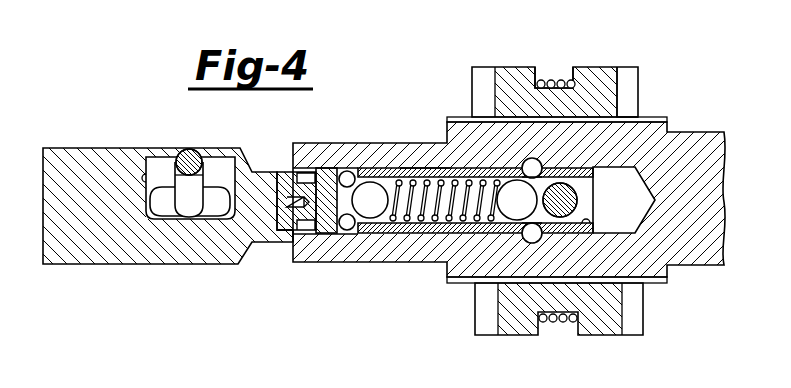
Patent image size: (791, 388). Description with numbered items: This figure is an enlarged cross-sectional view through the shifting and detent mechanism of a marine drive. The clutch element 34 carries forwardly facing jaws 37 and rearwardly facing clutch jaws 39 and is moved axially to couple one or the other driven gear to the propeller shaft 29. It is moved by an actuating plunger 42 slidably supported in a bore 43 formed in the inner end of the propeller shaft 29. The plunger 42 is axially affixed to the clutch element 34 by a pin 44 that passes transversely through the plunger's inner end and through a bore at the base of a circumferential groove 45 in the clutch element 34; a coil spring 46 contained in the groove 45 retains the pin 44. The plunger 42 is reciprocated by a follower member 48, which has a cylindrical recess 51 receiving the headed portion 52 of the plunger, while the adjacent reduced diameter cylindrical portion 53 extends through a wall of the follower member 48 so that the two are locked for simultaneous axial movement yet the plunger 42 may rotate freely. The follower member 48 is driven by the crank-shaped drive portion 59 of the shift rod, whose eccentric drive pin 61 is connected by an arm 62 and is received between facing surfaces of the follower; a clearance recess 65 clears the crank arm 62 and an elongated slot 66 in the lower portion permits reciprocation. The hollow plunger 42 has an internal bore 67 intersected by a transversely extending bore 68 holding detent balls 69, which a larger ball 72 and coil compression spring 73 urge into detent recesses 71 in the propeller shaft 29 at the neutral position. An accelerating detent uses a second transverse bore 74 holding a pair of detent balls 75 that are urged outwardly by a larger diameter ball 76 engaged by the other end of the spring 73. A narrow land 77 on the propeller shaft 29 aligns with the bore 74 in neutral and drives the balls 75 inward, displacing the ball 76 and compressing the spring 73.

The propeller shaft 29 is at (704, 267).
The clutch element 34 is at (596, 63).
The axially facing jaws 37 is at (480, 76).
The rearwardly facing clutch jaws 39 is at (629, 80).
The actuating plunger 42 is at (403, 167).
The bore 43 is at (606, 168).
The pin 44 is at (578, 203).
The circumferential groove 45 is at (570, 66).
The coil spring 46 is at (541, 79).
The follower member 48 is at (83, 250).
The cylindrical recess 51 is at (287, 241).
The headed portion 52 is at (285, 172).
The reduced diameter cylindrical portion 53 is at (320, 168).
The drive portion 59 is at (172, 170).
The drive pin 61 is at (192, 149).
The arm 62 is at (196, 187).
The clearance recess 65 is at (143, 173).
The elongated slot 66 is at (215, 212).
The internal bore 67 is at (643, 285).
The transversely extending bore 68 is at (526, 157).
The detent balls 69 is at (530, 178).
The detent recesses 71 is at (528, 160).
The larger ball 72 is at (501, 166).
The coil compression spring 73 is at (424, 167).
The bore 74 is at (344, 170).
The detent balls 75 is at (348, 171).
The larger diameter ball 76 is at (372, 184).
The narrow land 77 is at (373, 234).